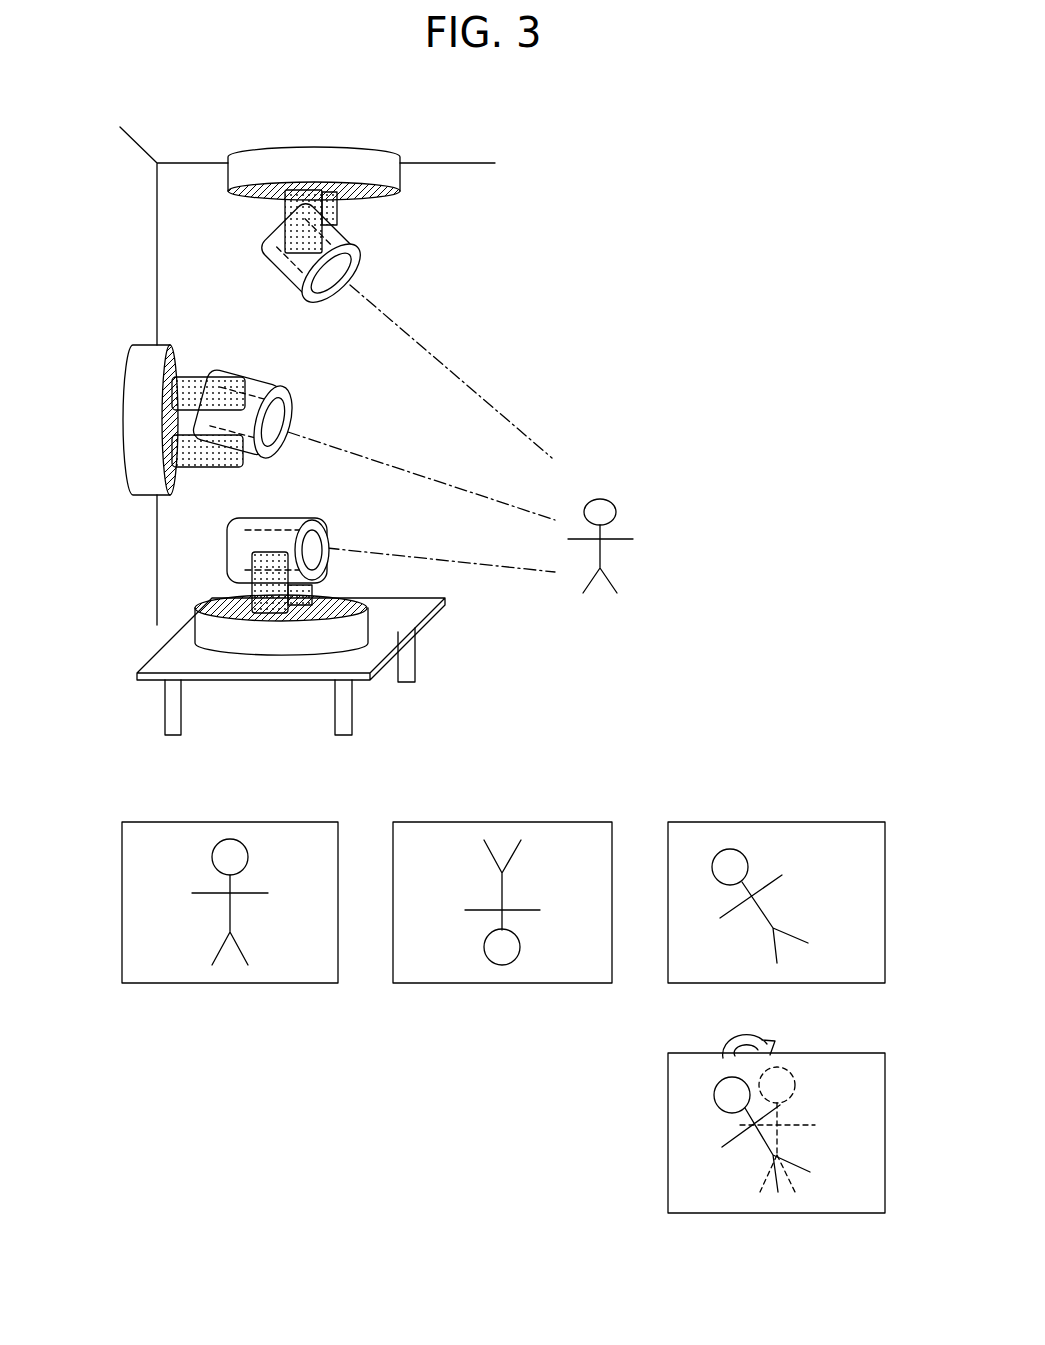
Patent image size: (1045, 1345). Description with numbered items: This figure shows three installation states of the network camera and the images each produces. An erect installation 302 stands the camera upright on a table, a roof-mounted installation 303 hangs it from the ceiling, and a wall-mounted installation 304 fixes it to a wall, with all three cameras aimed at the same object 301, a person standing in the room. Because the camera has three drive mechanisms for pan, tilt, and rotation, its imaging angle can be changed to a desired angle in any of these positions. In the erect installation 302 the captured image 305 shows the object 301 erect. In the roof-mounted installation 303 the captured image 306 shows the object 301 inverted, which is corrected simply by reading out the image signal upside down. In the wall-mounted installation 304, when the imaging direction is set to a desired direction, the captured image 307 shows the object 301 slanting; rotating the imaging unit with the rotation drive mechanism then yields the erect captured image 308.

The object 301 is at (604, 498).
The erect installation 302 is at (272, 648).
The roof-mounted installation 303 is at (313, 146).
The wall-mounted installation 304 is at (123, 420).
The captured image 305 is at (228, 985).
The captured image 306 is at (502, 985).
The captured image 307 is at (718, 985).
The captured image 308 is at (735, 1215).